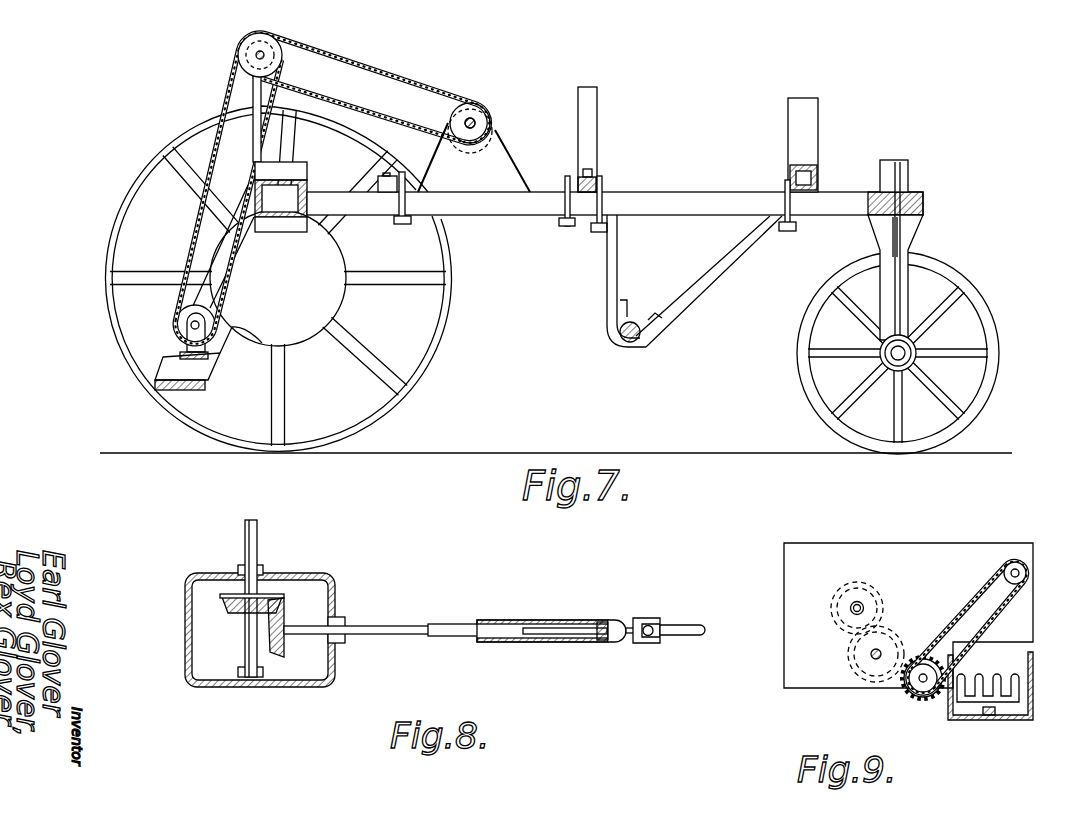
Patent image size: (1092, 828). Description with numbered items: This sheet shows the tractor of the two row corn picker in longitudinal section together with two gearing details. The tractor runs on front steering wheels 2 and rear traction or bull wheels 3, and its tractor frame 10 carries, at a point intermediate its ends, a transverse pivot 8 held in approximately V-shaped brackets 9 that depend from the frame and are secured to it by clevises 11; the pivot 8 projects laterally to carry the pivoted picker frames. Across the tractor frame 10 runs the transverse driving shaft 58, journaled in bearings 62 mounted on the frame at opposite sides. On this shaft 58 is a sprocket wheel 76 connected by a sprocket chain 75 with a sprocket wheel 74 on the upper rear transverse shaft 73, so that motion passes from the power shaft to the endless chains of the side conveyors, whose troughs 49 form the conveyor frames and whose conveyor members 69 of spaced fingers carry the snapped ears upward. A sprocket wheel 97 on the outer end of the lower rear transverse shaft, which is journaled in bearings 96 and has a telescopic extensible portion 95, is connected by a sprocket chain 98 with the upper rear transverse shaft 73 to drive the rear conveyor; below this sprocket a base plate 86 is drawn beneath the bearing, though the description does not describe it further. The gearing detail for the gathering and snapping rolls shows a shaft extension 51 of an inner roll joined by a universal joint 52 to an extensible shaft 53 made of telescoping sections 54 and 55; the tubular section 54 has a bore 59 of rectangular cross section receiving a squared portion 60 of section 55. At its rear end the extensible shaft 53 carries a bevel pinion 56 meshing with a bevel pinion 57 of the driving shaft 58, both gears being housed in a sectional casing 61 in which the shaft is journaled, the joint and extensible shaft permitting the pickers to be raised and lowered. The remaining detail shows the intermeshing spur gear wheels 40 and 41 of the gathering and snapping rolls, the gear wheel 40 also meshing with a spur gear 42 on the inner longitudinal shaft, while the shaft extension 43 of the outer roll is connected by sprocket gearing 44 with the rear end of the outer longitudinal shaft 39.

In FIG. 7, the front steering wheel 2 is at (977, 302).
In FIG. 7, the rear traction or bull wheel 3 is at (432, 362).
In FIG. 7, the transverse pivot 8 is at (633, 343).
In FIG. 7, the bracket 9 is at (697, 288).
In FIG. 7, the tractor frame 10 is at (671, 201).
In FIG. 7, the clevis 11 is at (601, 193).
In FIG. 9, the outer longitudinal shaft 39 is at (1028, 573).
In FIG. 9, the spur gear wheel 40 is at (870, 684).
In FIG. 9, the spur gear wheel 41 is at (918, 702).
In FIG. 9, the spur gear 42 is at (857, 582).
In FIG. 9, the shaft extension 43 is at (913, 672).
In FIG. 9, the sprocket gearing 44 is at (974, 595).
In FIG. 9, the trough 49 is at (1012, 721).
In FIG. 8, the shaft extension 51 is at (683, 636).
In FIG. 9, the shaft extension 51 is at (870, 654).
In FIG. 8, the universal joint 52 is at (641, 618).
In FIG. 8, the extensible shaft 53 is at (490, 613).
In FIG. 8, the tubular shaft section 54 is at (545, 620).
In FIG. 8, the shaft section 55 is at (410, 627).
In FIG. 8, the bevel pinion 56 is at (286, 660).
In FIG. 8, the bevel pinion 57 is at (222, 601).
In FIG. 7, the transverse driving shaft 58 is at (494, 130).
In FIG. 8, the transverse driving shaft 58 is at (244, 532).
In FIG. 8, the bore 59 is at (576, 637).
In FIG. 8, the squared portion 60 is at (462, 637).
In FIG. 8, the sectional casing 61 is at (305, 574).
In FIG. 7, the bearing 62 is at (500, 162).
In FIG. 9, the conveyor member 69 is at (1018, 688).
In FIG. 7, the upper rear transverse shaft 73 is at (268, 50).
In FIG. 7, the sprocket wheel 74 is at (248, 55).
In FIG. 7, the sprocket chain 75 is at (415, 82).
In FIG. 7, the sprocket wheel 76 is at (480, 111).
In FIG. 7, the base plate 86 is at (207, 389).
In FIG. 7, the telescopic extensible portion 95 is at (195, 336).
In FIG. 7, the bearing 96 is at (204, 343).
In FIG. 7, the sprocket wheel 97 is at (183, 322).
In FIG. 7, the sprocket chain 98 is at (178, 300).